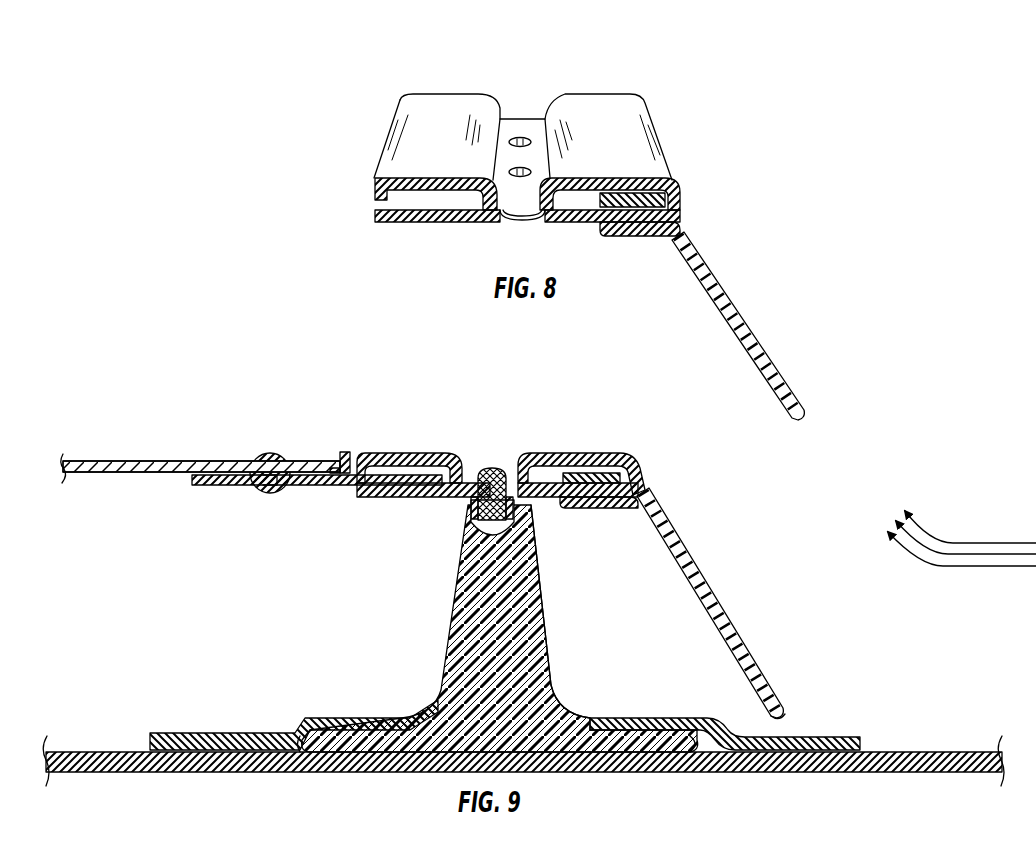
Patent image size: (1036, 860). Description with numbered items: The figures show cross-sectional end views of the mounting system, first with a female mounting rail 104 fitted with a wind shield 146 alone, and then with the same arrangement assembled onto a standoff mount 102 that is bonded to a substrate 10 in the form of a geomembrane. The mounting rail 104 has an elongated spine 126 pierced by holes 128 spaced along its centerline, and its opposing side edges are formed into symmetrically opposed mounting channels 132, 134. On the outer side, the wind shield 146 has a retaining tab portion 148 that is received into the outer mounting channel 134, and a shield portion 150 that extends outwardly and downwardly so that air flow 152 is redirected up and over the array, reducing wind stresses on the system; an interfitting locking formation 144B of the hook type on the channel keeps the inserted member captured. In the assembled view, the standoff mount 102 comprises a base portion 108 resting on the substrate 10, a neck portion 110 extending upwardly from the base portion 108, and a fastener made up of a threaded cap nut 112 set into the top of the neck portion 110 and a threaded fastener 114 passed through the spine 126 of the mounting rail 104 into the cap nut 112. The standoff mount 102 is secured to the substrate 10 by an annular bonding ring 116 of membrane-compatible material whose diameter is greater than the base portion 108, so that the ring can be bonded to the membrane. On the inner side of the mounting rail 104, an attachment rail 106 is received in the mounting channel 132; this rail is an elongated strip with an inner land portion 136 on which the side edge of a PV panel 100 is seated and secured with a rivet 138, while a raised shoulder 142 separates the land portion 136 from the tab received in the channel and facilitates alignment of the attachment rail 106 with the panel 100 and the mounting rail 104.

In FIG. 9, the substrate 10 is at (523, 724).
In FIG. 9, the PV panel 100 is at (200, 434).
In FIG. 9, the standoff mount 102 is at (500, 628).
In FIG. 8, the mounting rail 104 is at (523, 100).
In FIG. 9, the mounting rail 104 is at (585, 535).
In FIG. 9, the attachment rail 106 is at (280, 534).
In FIG. 9, the base portion 108 is at (579, 780).
In FIG. 9, the neck portion 110 is at (582, 611).
In FIG. 9, the threaded cap nut 112 is at (546, 532).
In FIG. 9, the threaded fastener 114 is at (525, 456).
In FIG. 9, the annular bonding ring 116 is at (294, 703).
In FIG. 8, the elongated spine 126 is at (481, 240).
In FIG. 8, the holes 128 is at (575, 100).
In FIG. 8, the mounting channel 132 is at (406, 148).
In FIG. 9, the mounting channel 132 is at (389, 417).
In FIG. 8, the mounting channel 134 is at (638, 132).
In FIG. 9, the mounting channel 134 is at (585, 438).
In FIG. 9, the inner land portion 136 is at (290, 519).
In FIG. 9, the rivet 138 is at (231, 436).
In FIG. 9, the raised shoulder 142 is at (308, 427).
In FIG. 8, the locking formation 144B is at (517, 191).
In FIG. 9, the locking formation 144B is at (556, 467).
In FIG. 8, the wind shield 146 is at (763, 323).
In FIG. 9, the wind shield 146 is at (733, 603).
In FIG. 8, the retaining tab portion 148 is at (673, 153).
In FIG. 9, the retaining tab portion 148 is at (642, 435).
In FIG. 9, the shield portion 150 is at (805, 661).
In FIG. 9, the air flow 152 is at (962, 510).